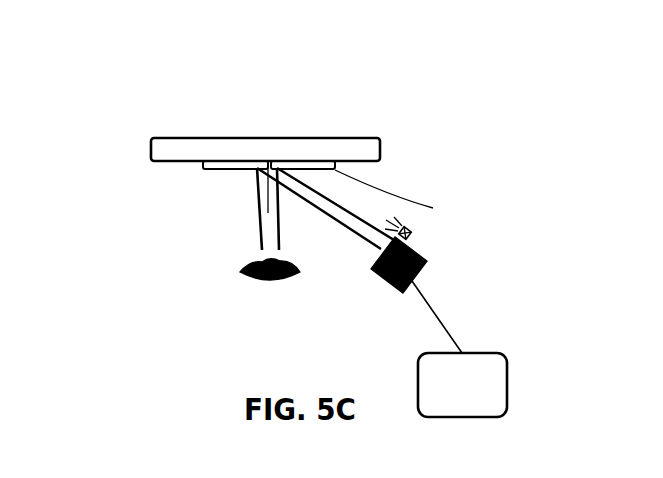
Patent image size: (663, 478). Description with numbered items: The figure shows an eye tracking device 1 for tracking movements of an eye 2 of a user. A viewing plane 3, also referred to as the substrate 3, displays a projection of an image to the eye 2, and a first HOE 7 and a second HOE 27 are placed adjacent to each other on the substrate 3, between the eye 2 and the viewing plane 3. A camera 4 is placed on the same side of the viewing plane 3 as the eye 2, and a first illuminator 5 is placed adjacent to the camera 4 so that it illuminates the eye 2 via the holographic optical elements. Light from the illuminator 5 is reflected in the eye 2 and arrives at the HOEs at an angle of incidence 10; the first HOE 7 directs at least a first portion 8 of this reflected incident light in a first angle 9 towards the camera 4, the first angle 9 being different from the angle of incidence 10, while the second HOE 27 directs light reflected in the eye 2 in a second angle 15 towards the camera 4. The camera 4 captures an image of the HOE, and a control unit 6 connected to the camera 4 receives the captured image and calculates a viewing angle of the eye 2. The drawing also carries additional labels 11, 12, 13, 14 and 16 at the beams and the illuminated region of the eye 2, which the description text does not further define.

The eye tracking device 1 is at (104, 65).
The eye 2 is at (240, 272).
The viewing plane 3 is at (268, 140).
The camera 4 is at (392, 292).
The illuminator 5 is at (411, 234).
The evaluation unit 6 is at (486, 352).
The first holographic optical element 7 is at (186, 163).
The first portion of incident light 8 is at (258, 205).
The first angle 9 is at (267, 201).
The angle of incidence 10 is at (257, 186).
The illumination beam 11 is at (257, 233).
The reflected beam 12 is at (281, 190).
The measuring spot 13 is at (282, 266).
The sample surface 14 is at (250, 262).
The second angle 15 is at (302, 170).
The optical path 16 is at (330, 215).
The second holographic optical element 27 is at (396, 197).